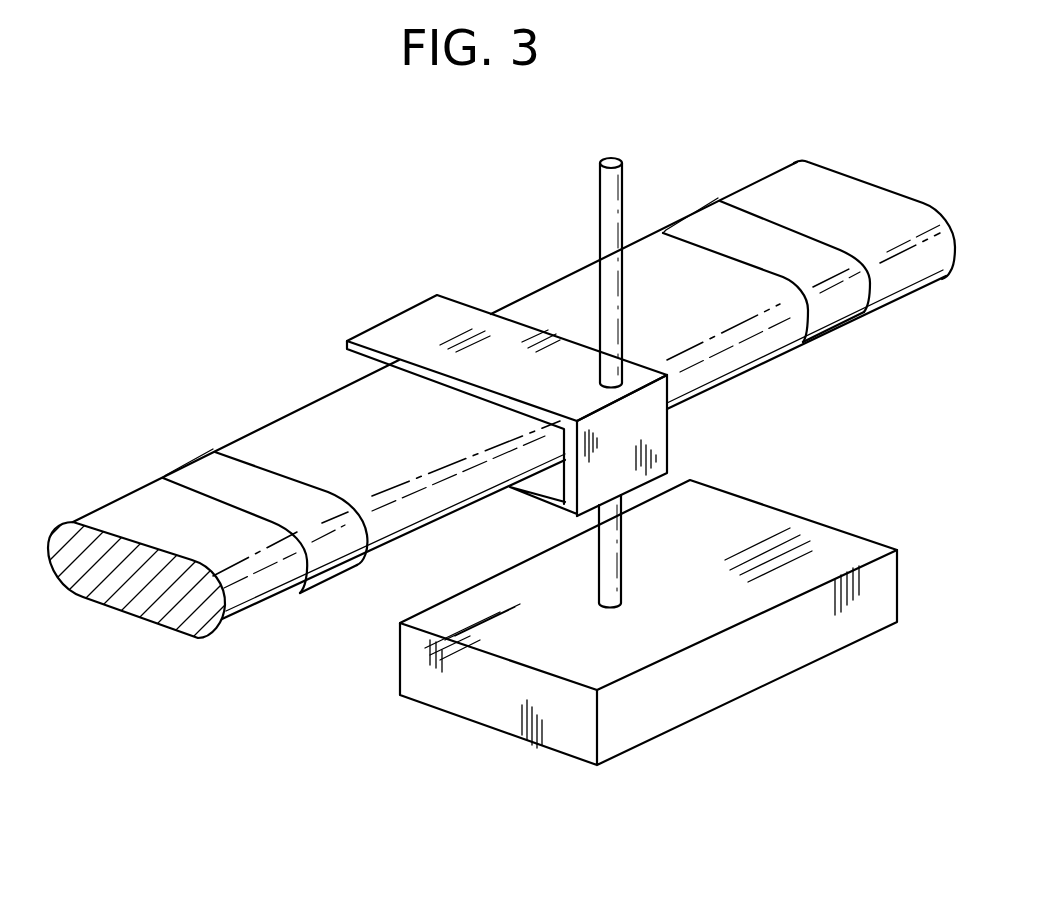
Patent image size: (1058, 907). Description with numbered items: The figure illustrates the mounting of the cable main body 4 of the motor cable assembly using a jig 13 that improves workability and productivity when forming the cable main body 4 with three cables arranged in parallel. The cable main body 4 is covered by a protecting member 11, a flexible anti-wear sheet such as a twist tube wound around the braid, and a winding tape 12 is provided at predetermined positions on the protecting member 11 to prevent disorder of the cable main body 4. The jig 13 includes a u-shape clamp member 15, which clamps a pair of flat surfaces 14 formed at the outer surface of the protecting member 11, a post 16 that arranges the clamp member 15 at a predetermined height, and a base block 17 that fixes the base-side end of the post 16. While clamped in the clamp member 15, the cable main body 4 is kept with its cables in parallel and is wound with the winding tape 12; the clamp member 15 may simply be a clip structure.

The cable main body 4 is at (258, 418).
The protecting member 11 is at (132, 508).
The winding tape 12 is at (195, 478).
The jig 13 is at (624, 461).
The flat surfaces 14 is at (330, 408).
The clamp member 15 is at (406, 325).
The post 16 is at (602, 205).
The base block 17 is at (775, 658).